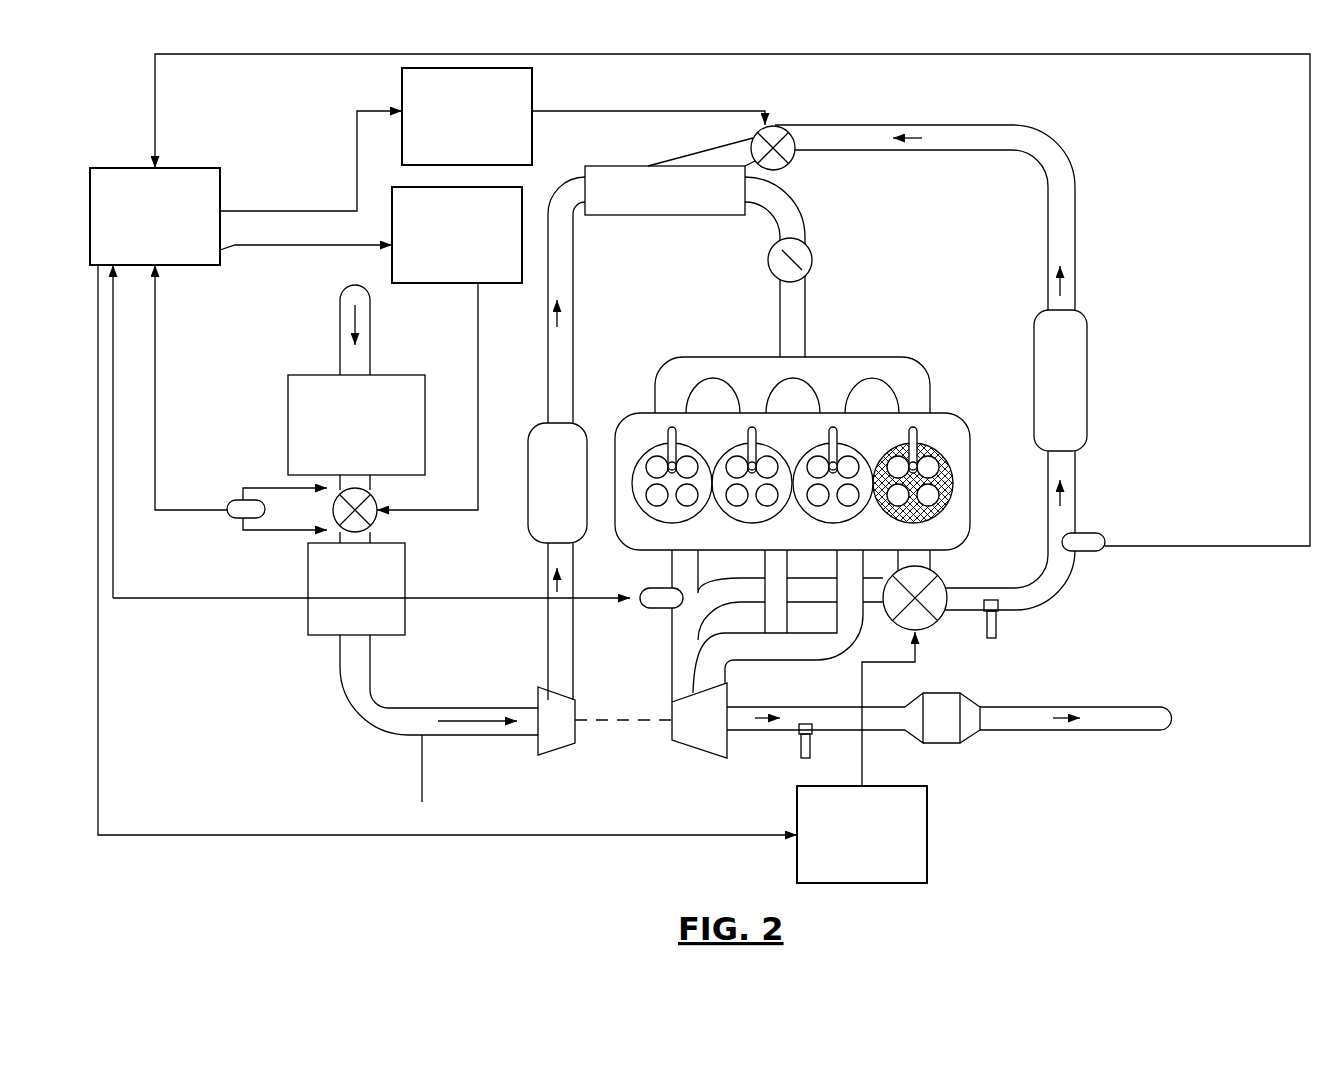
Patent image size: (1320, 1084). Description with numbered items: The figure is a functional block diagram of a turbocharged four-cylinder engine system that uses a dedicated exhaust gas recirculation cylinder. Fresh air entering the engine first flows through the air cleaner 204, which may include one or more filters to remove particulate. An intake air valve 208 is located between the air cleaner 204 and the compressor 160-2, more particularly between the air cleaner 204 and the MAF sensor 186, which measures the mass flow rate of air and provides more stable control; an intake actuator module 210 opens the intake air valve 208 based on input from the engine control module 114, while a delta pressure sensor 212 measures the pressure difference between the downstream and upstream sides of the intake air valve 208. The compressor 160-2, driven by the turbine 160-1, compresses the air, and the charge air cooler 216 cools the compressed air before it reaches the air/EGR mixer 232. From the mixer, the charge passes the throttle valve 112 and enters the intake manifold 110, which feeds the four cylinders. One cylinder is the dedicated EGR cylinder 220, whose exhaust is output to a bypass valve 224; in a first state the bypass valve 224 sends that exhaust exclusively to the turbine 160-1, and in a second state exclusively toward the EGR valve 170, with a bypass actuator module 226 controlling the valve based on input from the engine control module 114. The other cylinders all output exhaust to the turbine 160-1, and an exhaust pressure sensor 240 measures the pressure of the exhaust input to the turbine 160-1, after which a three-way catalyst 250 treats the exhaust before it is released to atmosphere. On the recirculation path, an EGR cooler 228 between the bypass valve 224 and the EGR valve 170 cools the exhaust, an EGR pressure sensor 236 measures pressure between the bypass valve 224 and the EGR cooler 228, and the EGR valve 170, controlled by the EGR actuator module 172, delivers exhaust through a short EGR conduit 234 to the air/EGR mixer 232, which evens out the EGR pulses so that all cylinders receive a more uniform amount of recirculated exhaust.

The engine control module 114 is at (222, 171).
The EGR actuator module 172 is at (533, 127).
The intake actuator module 210 is at (432, 283).
The bypass actuator module 226 is at (922, 883).
The air cleaner 204 is at (288, 430).
The intake air valve 208 is at (333, 500).
The delta pressure sensor 212 is at (232, 520).
The mass air flow sensor 186 is at (308, 620).
The compressor 160-2 is at (557, 757).
The turbine 160-1 is at (697, 745).
The charge air cooler 216 is at (528, 520).
The air/EGR mixer 232 is at (632, 215).
The EGR conduit 234 is at (708, 150).
The EGR cooler 228 is at (1087, 378).
The EGR valve 170 is at (768, 124).
The throttle valve 112 is at (812, 262).
The intake manifold 110 is at (867, 357).
The dedicated EGR cylinder 220 is at (972, 540).
The bypass valve 224 is at (925, 635).
The EGR pressure sensor 236 is at (1092, 551).
The exhaust pressure sensor 240 is at (663, 610).
The three-way catalyst 250 is at (937, 743).